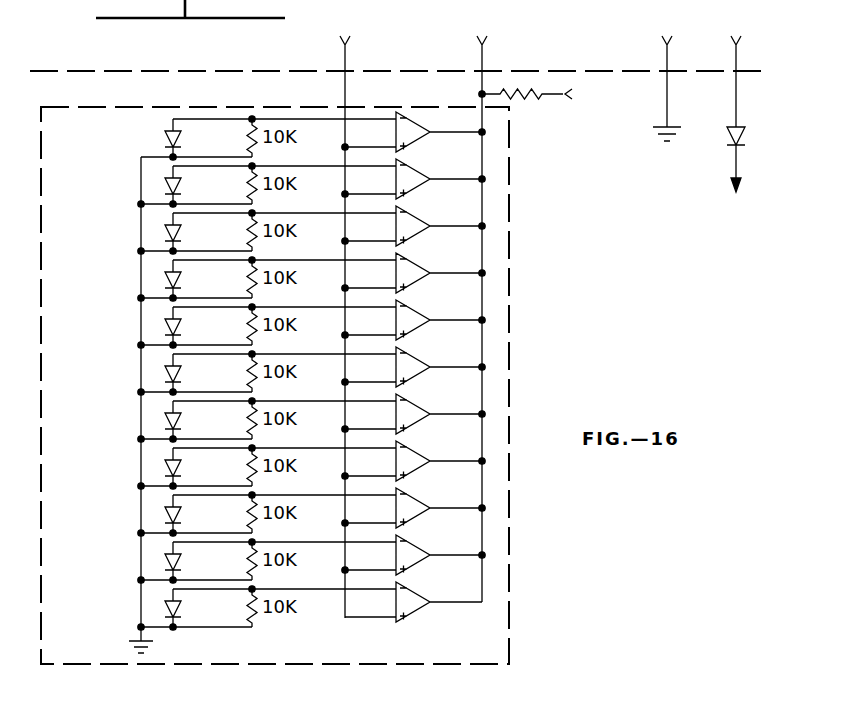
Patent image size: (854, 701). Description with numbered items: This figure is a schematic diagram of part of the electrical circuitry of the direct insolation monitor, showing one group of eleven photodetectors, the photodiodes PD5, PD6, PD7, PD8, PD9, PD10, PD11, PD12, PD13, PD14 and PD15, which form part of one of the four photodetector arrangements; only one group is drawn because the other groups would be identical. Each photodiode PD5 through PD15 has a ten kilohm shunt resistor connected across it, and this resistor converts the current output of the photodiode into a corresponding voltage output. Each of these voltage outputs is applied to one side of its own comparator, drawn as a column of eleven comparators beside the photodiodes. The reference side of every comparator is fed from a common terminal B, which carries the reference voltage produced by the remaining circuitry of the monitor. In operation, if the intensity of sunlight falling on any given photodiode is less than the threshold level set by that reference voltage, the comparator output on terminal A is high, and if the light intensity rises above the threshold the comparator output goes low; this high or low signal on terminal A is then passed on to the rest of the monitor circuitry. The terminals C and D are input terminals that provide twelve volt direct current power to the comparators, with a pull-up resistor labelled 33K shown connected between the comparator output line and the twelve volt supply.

The photodetector PD5 is at (165, 138).
The photodetector PD6 is at (165, 185).
The photodetector PD7 is at (165, 232).
The photodetector PD8 is at (165, 279).
The photodetector PD9 is at (165, 326).
The photodetector PD10 is at (165, 373).
The photodetector PD11 is at (165, 420).
The photodetector PD12 is at (165, 467).
The photodetector PD13 is at (165, 514).
The photodetector PD14 is at (165, 561).
The photodetector PD15 is at (165, 608).
The comparator output terminal A is at (481, 308).
The reference terminal B is at (344, 316).
The power input terminal C is at (733, 114).
The power input terminal D is at (667, 77).
The 3.3K resistor 33K is at (558, 87).